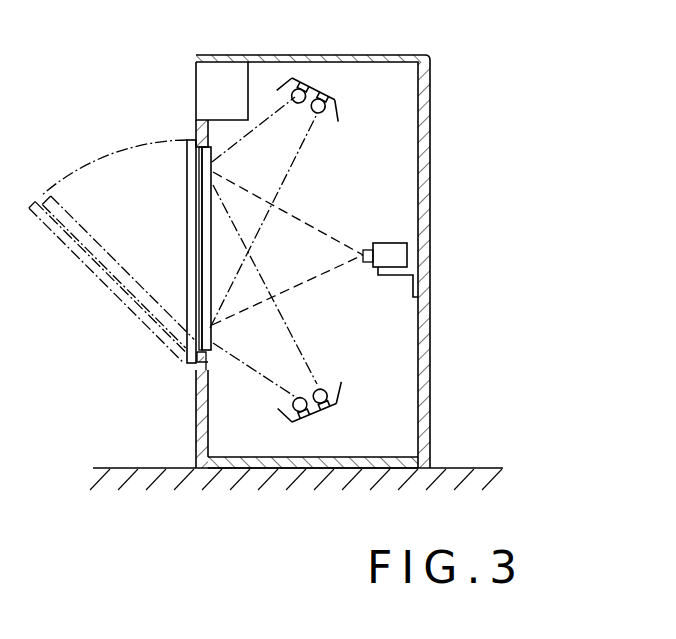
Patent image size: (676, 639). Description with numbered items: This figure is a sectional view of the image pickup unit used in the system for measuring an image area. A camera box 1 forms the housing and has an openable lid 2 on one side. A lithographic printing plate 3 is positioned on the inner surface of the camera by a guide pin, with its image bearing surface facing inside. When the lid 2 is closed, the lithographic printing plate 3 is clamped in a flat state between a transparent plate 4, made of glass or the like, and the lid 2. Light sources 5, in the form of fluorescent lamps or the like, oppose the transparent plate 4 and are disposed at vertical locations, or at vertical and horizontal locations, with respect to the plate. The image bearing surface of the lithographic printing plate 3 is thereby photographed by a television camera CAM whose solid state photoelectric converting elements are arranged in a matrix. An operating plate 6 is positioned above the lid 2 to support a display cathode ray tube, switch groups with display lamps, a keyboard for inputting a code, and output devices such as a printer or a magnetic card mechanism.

The camera box 1 is at (429, 116).
The openable lid 2 is at (188, 154).
The lithographic printing plate 3 is at (200, 190).
The transparent plate 4 is at (204, 262).
The light sources 5 is at (285, 78).
The operating plate 6 is at (196, 88).
The television camera CAM is at (388, 246).